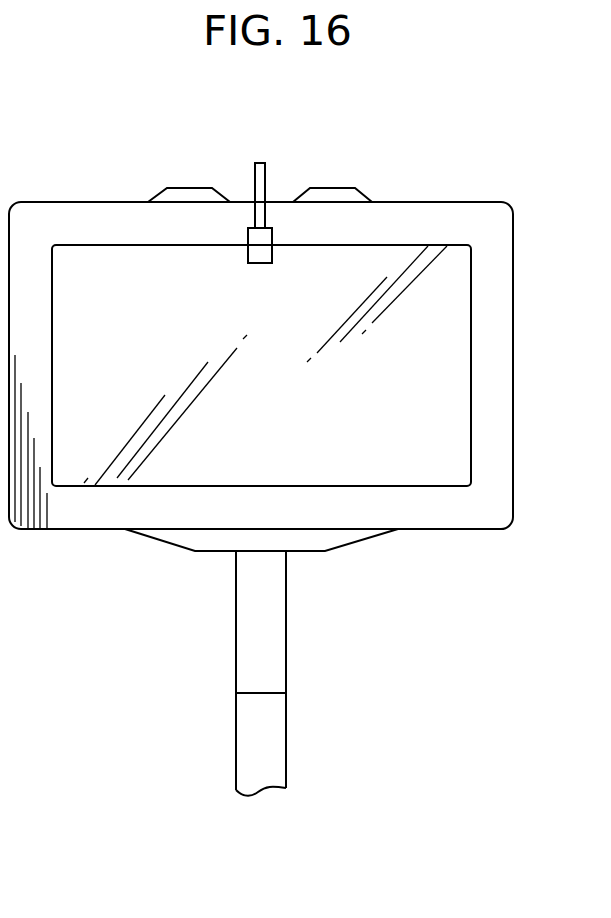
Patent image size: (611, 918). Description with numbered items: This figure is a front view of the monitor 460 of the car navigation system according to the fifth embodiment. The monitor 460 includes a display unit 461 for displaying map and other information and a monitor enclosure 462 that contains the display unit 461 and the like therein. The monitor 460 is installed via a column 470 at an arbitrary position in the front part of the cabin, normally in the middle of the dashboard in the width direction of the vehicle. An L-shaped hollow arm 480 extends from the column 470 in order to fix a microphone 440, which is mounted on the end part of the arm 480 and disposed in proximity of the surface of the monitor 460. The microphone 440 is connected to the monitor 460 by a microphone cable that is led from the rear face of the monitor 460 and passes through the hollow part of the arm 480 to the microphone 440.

The monitor 460 is at (447, 190).
The display unit 461 is at (447, 345).
The monitor enclosure 462 is at (487, 268).
The microphone 440 is at (246, 255).
The arm 480 is at (265, 176).
The column 470 is at (287, 633).